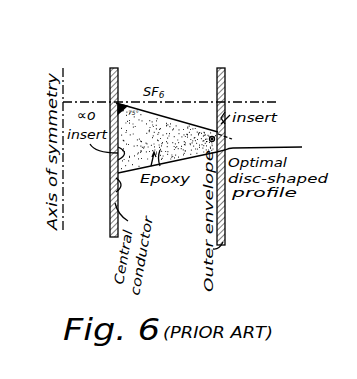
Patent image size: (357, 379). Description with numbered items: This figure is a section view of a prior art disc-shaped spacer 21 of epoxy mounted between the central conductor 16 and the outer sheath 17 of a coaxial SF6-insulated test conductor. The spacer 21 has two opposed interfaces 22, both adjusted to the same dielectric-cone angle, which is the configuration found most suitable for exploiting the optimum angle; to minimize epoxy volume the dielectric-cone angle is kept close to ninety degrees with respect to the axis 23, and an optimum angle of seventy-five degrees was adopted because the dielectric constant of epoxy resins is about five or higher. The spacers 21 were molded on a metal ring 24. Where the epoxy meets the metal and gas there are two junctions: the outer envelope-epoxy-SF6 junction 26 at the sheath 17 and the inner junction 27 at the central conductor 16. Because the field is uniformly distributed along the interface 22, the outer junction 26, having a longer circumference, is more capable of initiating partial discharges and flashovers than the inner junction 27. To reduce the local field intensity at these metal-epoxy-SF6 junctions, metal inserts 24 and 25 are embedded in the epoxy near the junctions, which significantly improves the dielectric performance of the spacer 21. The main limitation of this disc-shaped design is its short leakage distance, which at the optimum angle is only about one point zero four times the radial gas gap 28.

The central conductor 16 is at (110, 226).
The sheath 17 is at (222, 220).
The disc-shaped spacer 21 is at (168, 151).
The interfaces 22 is at (166, 113).
The axis 23 is at (243, 103).
The metal ring 24 is at (232, 139).
The metal insert 25 is at (110, 160).
The outer envelope-epoxy-SF6 junction 26 is at (197, 92).
The inner junction 27 is at (115, 102).
The radial gas gap 28 is at (190, 230).